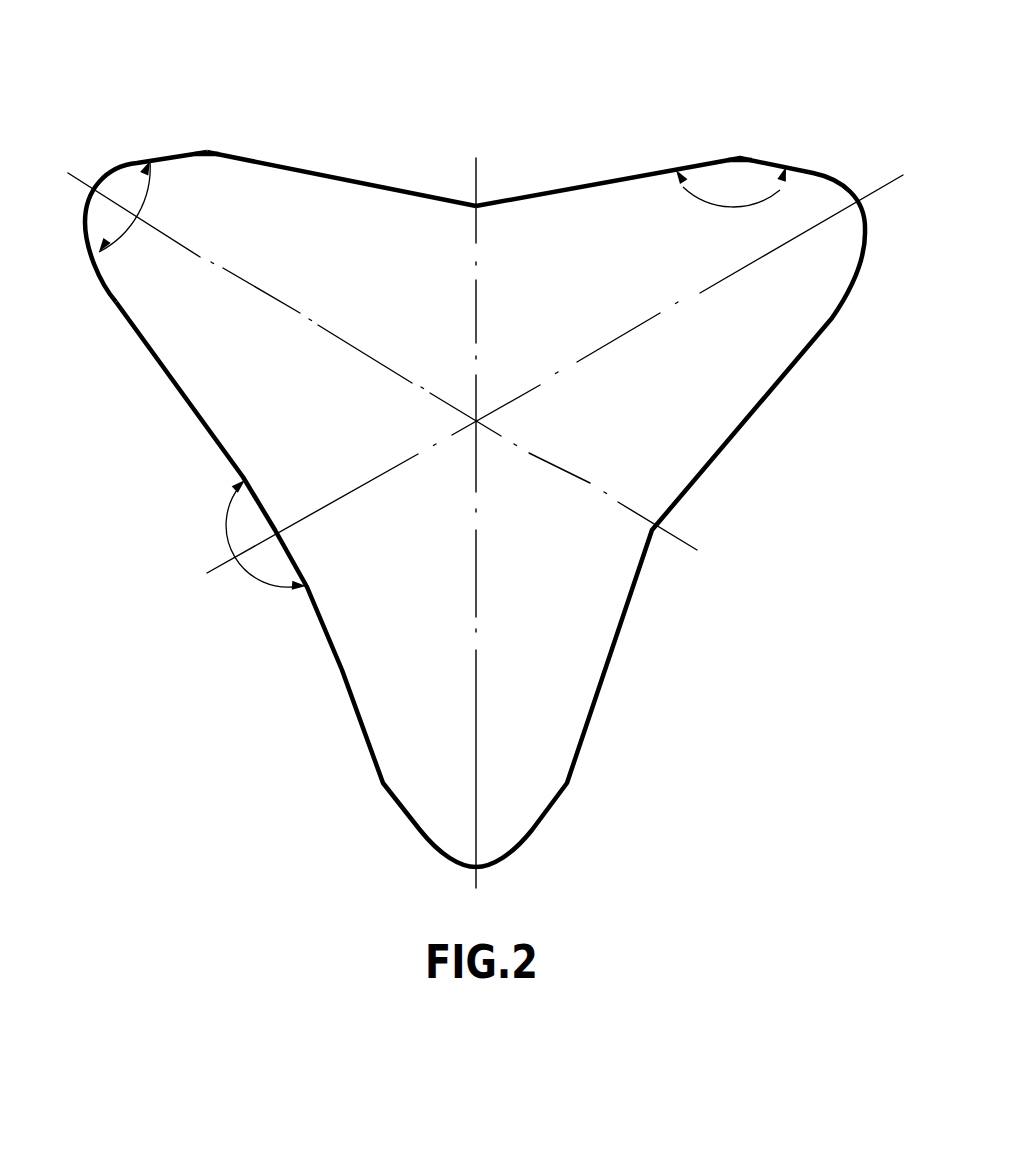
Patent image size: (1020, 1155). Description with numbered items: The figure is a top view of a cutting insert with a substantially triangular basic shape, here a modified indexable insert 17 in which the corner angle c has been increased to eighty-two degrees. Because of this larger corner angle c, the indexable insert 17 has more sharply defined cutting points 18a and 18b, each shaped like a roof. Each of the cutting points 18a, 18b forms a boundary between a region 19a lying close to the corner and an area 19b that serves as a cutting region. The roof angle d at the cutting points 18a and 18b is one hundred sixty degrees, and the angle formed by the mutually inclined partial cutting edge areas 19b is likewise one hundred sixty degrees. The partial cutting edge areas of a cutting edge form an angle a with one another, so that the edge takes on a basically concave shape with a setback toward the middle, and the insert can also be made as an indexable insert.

The indexable insert 17 is at (568, 677).
The cutting point 18a is at (207, 130).
The cutting point 18b is at (740, 136).
The region close to the corner 19a is at (98, 170).
The partial cutting edge area serving as cutting region 19b is at (337, 175).
The angle a is at (252, 573).
The corner angle c is at (130, 228).
The roof angle d is at (737, 210).